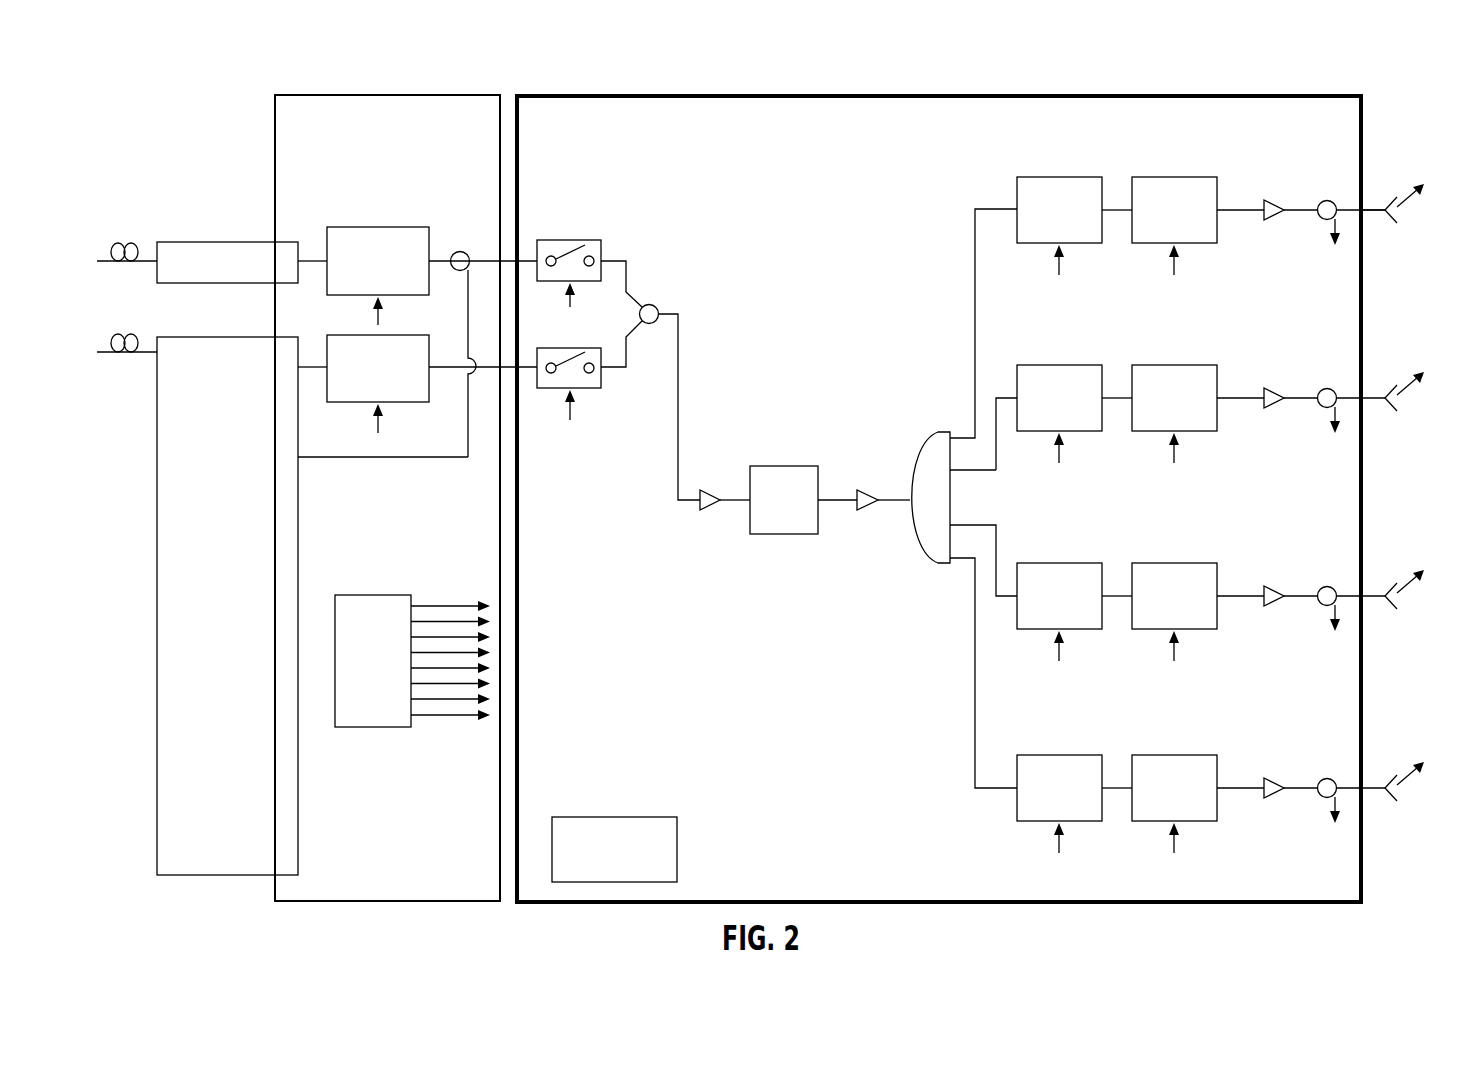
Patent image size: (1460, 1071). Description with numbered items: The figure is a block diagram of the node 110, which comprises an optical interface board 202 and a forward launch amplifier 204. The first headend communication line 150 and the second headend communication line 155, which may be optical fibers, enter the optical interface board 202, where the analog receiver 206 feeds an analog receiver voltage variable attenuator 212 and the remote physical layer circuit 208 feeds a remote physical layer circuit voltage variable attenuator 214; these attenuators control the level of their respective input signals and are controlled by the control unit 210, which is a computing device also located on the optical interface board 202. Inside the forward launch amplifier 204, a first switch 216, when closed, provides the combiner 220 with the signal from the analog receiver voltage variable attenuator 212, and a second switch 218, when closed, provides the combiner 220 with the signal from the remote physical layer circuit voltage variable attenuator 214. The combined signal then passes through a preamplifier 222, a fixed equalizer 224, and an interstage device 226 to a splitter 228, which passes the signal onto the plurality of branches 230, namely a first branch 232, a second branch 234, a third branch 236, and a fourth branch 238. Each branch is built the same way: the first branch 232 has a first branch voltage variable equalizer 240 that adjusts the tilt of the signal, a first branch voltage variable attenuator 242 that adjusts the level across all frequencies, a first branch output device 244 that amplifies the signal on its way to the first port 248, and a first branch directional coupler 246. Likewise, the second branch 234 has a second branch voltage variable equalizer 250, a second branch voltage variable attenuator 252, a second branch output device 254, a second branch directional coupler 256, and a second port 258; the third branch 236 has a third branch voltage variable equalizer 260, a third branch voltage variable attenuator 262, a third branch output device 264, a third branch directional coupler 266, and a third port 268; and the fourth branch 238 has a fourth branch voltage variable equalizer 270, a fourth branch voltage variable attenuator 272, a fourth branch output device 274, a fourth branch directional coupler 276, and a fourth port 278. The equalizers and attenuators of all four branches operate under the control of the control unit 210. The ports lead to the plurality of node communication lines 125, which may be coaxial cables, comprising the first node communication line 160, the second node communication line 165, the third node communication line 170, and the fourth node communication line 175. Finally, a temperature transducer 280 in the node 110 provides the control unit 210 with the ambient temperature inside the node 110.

The node 110 is at (232, 104).
The plurality of node communication lines 125 is at (1390, 114).
The first headend communication line 150 is at (141, 268).
The second headend communication line 155 is at (141, 360).
The first node communication line 160 is at (1413, 165).
The second node communication line 165 is at (1413, 353).
The third node communication line 170 is at (1413, 551).
The fourth node communication line 175 is at (1413, 743).
The optical interface board 202 is at (333, 94).
The forward launch amplifier 204 is at (1303, 96).
The analog receiver 206 is at (215, 242).
The remote physical layer circuit 208 is at (215, 337).
The control unit 210 is at (375, 595).
The analog receiver voltage variable attenuator 212 is at (373, 227).
The remote physical layer circuit voltage variable attenuator 214 is at (370, 335).
The first switch 216 is at (601, 245).
The second switch 218 is at (598, 390).
The combiner 220 is at (655, 305).
The preamplifier 222 is at (710, 490).
The fixed equalizer 224 is at (783, 466).
The interstage device 226 is at (866, 490).
The splitter 228 is at (935, 435).
The plurality of branches 230 is at (946, 394).
The first branch 232 is at (976, 188).
The second branch 234 is at (996, 386).
The third branch 236 is at (996, 604).
The fourth branch 238 is at (978, 798).
The first branch voltage variable equalizer 240 is at (1063, 177).
The first branch voltage variable attenuator 242 is at (1170, 177).
The first branch output device 244 is at (1273, 215).
The first branch directional coupler 246 is at (1327, 200).
The first port 248 is at (1372, 208).
The second branch voltage variable equalizer 250 is at (1063, 365).
The second branch voltage variable attenuator 252 is at (1170, 365).
The second branch output device 254 is at (1273, 403).
The second branch directional coupler 256 is at (1327, 388).
The second port 258 is at (1372, 396).
The third branch voltage variable equalizer 260 is at (1063, 563).
The third branch voltage variable attenuator 262 is at (1170, 563).
The third branch output device 264 is at (1273, 601).
The third branch directional coupler 266 is at (1327, 586).
The third port 268 is at (1372, 594).
The fourth branch voltage variable equalizer 270 is at (1063, 755).
The fourth branch voltage variable attenuator 272 is at (1170, 755).
The fourth branch output device 274 is at (1273, 793).
The fourth branch directional coupler 276 is at (1327, 778).
The fourth port 278 is at (1372, 786).
The temperature transducer 280 is at (610, 817).